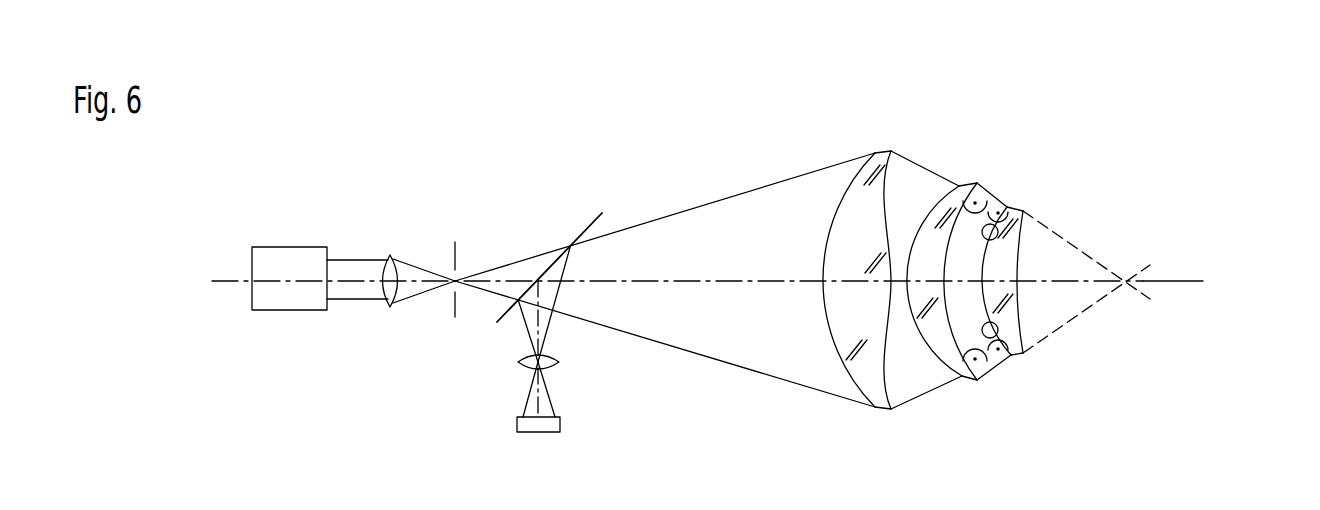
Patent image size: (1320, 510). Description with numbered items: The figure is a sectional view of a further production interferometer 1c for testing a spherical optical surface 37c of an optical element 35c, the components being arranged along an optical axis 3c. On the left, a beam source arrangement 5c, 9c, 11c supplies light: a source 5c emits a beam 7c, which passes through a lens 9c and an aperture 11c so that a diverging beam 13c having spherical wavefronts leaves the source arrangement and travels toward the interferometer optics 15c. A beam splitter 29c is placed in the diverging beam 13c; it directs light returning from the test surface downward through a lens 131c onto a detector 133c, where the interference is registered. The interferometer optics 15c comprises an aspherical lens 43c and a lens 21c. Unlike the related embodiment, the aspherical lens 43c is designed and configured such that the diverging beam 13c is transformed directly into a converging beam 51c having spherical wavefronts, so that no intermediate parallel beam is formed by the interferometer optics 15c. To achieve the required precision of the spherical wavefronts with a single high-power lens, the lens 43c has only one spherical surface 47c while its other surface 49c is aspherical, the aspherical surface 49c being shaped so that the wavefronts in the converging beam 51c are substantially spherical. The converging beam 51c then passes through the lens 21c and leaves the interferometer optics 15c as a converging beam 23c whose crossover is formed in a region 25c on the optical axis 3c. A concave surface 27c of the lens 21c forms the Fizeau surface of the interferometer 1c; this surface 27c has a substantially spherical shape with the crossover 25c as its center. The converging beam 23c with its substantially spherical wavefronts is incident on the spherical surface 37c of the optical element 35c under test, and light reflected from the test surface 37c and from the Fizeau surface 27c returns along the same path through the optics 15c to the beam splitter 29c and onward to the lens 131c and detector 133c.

The production interferometer 1c is at (641, 148).
The optical axis 3c is at (232, 283).
The beam source arrangement 5c is at (290, 247).
The light beam 7c is at (358, 300).
The beam source arrangement 9c is at (390, 255).
The beam source arrangement 11c is at (457, 246).
The diverging beam 13c is at (692, 206).
The interferometer optics 15c is at (959, 135).
The lens 21c is at (975, 381).
The converging beam 23c is at (997, 358).
The crossover region 25c is at (1127, 278).
The concave surface 27c is at (986, 206).
The beam splitter 29c is at (583, 234).
The optical element 35c is at (1022, 356).
The spherical optical surface 37c is at (1018, 222).
The aspherical lens 43c is at (887, 412).
The spherical surface 47c is at (855, 180).
The aspherical surface 49c is at (890, 178).
The converging beam 51c is at (925, 393).
The detector lens 131c is at (559, 363).
The detector 133c is at (560, 425).